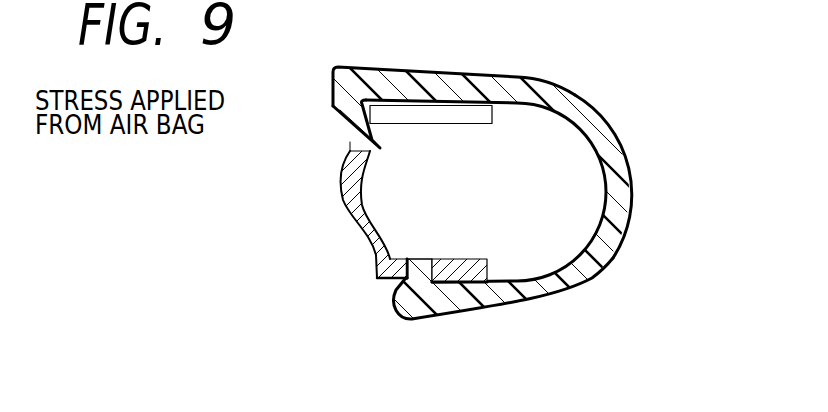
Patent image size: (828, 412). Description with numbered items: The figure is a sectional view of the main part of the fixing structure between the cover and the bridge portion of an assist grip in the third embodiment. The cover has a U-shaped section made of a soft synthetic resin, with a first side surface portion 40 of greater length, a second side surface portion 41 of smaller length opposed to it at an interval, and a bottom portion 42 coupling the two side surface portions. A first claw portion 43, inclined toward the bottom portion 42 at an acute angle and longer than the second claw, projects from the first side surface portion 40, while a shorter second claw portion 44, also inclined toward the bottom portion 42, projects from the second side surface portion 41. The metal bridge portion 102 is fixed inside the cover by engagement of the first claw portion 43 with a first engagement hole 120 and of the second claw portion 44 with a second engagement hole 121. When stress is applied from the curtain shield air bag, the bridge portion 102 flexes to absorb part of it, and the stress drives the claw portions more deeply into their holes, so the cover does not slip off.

The first side surface portion 40 is at (483, 74).
The second side surface portion 41 is at (538, 300).
The bottom portion 42 is at (636, 193).
The first claw portion 43 is at (348, 126).
The second claw portion 44 is at (433, 258).
The bridge portion 102 is at (477, 124).
The first engagement hole 120 is at (352, 150).
The second engagement hole 121 is at (417, 258).